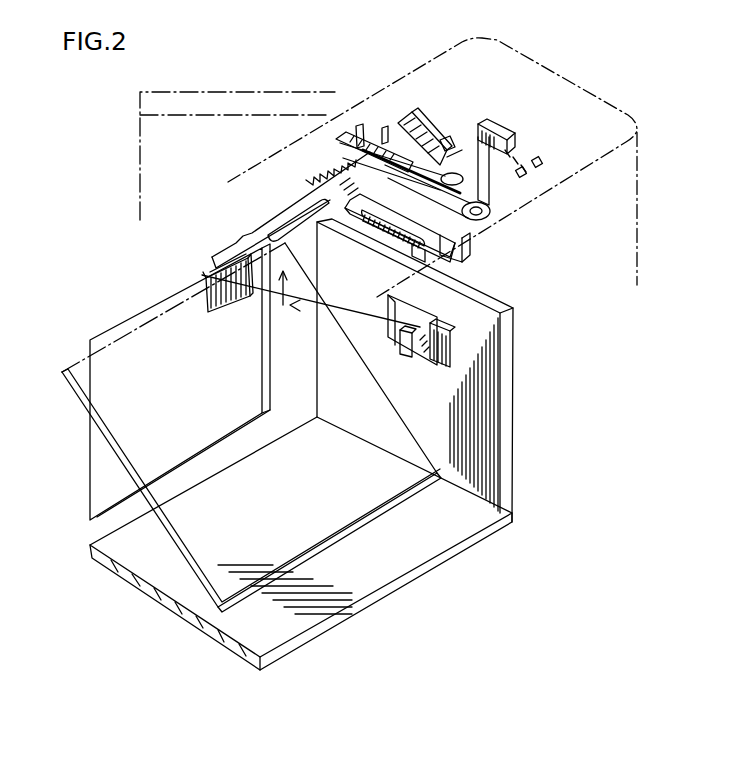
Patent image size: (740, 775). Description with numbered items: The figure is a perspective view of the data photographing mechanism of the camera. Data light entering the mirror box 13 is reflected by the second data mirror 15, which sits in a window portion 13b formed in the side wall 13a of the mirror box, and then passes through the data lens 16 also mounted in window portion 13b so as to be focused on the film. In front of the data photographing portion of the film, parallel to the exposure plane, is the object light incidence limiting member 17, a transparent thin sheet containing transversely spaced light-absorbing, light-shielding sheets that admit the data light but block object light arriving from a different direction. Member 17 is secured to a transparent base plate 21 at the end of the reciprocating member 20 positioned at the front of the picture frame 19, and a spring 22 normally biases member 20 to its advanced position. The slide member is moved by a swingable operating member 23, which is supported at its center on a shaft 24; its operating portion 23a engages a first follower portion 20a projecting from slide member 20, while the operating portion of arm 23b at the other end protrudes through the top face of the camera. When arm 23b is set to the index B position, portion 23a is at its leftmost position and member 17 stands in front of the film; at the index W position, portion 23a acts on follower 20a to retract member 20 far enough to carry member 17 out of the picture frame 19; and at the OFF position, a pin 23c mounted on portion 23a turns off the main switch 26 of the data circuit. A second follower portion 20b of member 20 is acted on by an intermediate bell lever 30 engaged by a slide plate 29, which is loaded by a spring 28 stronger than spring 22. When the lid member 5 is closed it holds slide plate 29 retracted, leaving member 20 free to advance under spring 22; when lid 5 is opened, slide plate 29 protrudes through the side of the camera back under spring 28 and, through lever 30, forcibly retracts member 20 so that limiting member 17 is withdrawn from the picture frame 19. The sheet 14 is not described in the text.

The lid member 5 is at (186, 93).
The mirror box 13 is at (430, 542).
The side wall 13a is at (485, 299).
The window portion 13b is at (400, 308).
The flexible printed circuit sheet 14 is at (336, 537).
The second data mirror 15 is at (436, 358).
The data lens 16 is at (403, 350).
The object light incidence limiting member 17 is at (220, 313).
The picture frame 19 is at (266, 356).
The reciprocating member 20 is at (292, 222).
The first follower portion 20a is at (360, 124).
The second follower portion 20b is at (440, 137).
The transparent base plate 21 is at (206, 280).
The spring 22 is at (353, 168).
The operating member 23 is at (452, 150).
The operating portion 23a is at (340, 135).
The operating portion of arm 23b is at (510, 124).
The pin 23c is at (384, 126).
The shaft 24 is at (488, 195).
The main switch 26 is at (448, 150).
The spring 28 is at (380, 228).
The slide plate 29 is at (415, 236).
The intermediate bell lever 30 is at (468, 232).